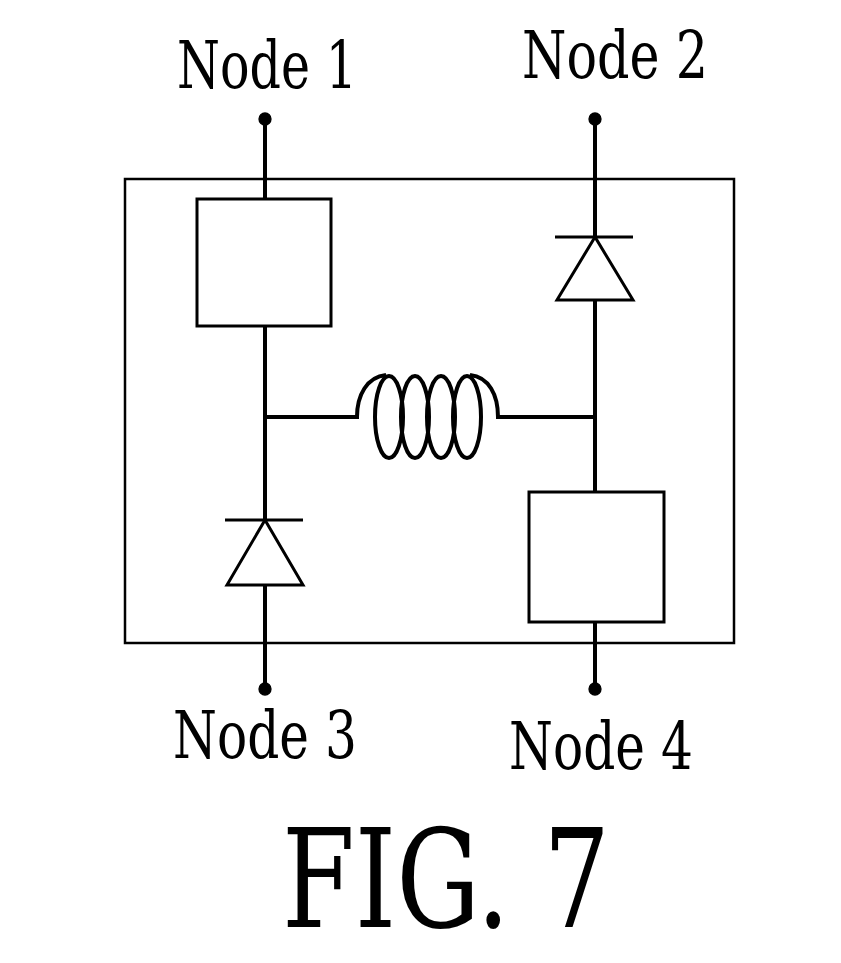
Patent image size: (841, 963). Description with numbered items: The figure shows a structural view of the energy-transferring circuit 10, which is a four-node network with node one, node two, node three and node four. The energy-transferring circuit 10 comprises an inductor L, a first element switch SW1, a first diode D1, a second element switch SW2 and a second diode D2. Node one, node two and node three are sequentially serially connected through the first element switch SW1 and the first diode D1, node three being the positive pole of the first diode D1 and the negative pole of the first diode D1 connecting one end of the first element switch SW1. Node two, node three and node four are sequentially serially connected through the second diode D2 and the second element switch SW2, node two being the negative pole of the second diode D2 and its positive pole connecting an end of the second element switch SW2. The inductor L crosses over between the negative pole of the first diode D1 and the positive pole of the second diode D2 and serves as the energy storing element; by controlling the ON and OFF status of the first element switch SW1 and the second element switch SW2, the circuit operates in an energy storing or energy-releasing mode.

The energy-transferring circuit 10 is at (734, 391).
The first element switch SW1 is at (264, 262).
The second element switch SW2 is at (596, 557).
The first diode D1 is at (234, 552).
The second diode D2 is at (624, 268).
The inductor L is at (426, 391).